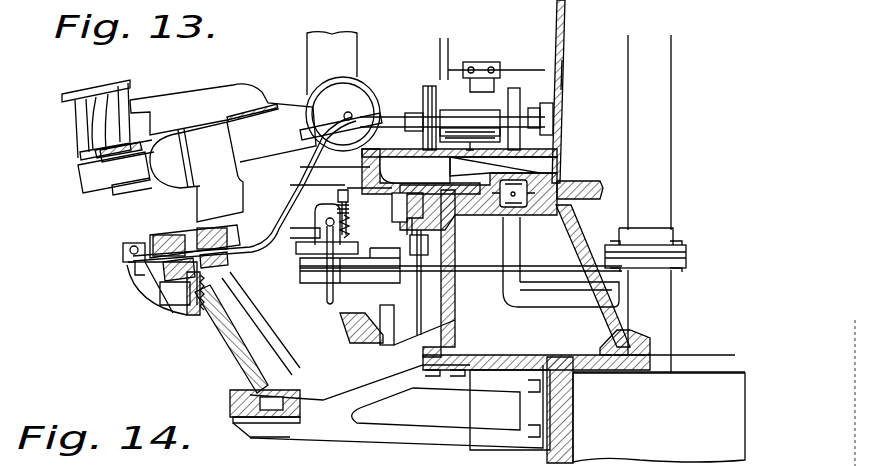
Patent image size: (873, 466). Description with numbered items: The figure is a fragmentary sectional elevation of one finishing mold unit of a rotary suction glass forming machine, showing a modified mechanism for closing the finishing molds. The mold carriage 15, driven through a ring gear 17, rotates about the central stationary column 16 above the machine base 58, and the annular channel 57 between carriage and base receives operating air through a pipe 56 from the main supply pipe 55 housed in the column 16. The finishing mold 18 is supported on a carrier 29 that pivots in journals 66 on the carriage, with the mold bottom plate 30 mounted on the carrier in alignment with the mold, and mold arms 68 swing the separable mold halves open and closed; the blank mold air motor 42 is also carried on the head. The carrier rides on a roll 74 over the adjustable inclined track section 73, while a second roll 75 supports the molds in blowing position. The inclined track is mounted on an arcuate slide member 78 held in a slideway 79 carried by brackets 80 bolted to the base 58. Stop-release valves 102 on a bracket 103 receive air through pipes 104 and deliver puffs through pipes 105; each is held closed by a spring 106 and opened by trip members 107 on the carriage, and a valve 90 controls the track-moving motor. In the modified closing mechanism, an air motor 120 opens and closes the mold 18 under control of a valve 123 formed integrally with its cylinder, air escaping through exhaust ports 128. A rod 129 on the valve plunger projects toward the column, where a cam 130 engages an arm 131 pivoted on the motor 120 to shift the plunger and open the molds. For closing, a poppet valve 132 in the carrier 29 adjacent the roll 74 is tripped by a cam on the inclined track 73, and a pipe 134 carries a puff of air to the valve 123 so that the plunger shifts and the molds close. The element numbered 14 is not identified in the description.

The frame 14 is at (320, 222).
The mold carriage 15 is at (330, 168).
The central stationary column 16 is at (566, 58).
The ring gear 17 is at (385, 211).
The finishing mold 18 is at (60, 134).
The carrier 29 is at (171, 172).
The mold bottom plate 30 is at (82, 154).
The air motor 42 is at (562, 75).
The pipe 55 is at (658, 105).
The pipe 56 is at (566, 305).
The annular channel 57 is at (558, 180).
The base 58 is at (553, 210).
The journals 66 is at (303, 103).
The mold arms 68 is at (223, 123).
The inclined track section 73 is at (197, 327).
The roll 74 is at (165, 240).
The second roll 75 is at (211, 266).
The arcuate slide member 78 is at (292, 392).
The slideway 79 is at (232, 402).
The brackets 80 is at (412, 430).
The valve 90 is at (536, 320).
The valves 102 is at (315, 224).
The bracket 103 is at (306, 248).
The pipes 104 is at (530, 272).
The pipes 105 is at (326, 296).
The spring 106 is at (350, 233).
The trip members 107 is at (341, 190).
The air motor 120 is at (429, 78).
The valve 123 is at (496, 102).
The exhaust ports 128 is at (476, 118).
The rod 129 is at (516, 110).
The cam 130 is at (554, 116).
The arm 131 is at (565, 100).
The poppet valve 132 is at (123, 252).
The pipe 134 is at (295, 190).